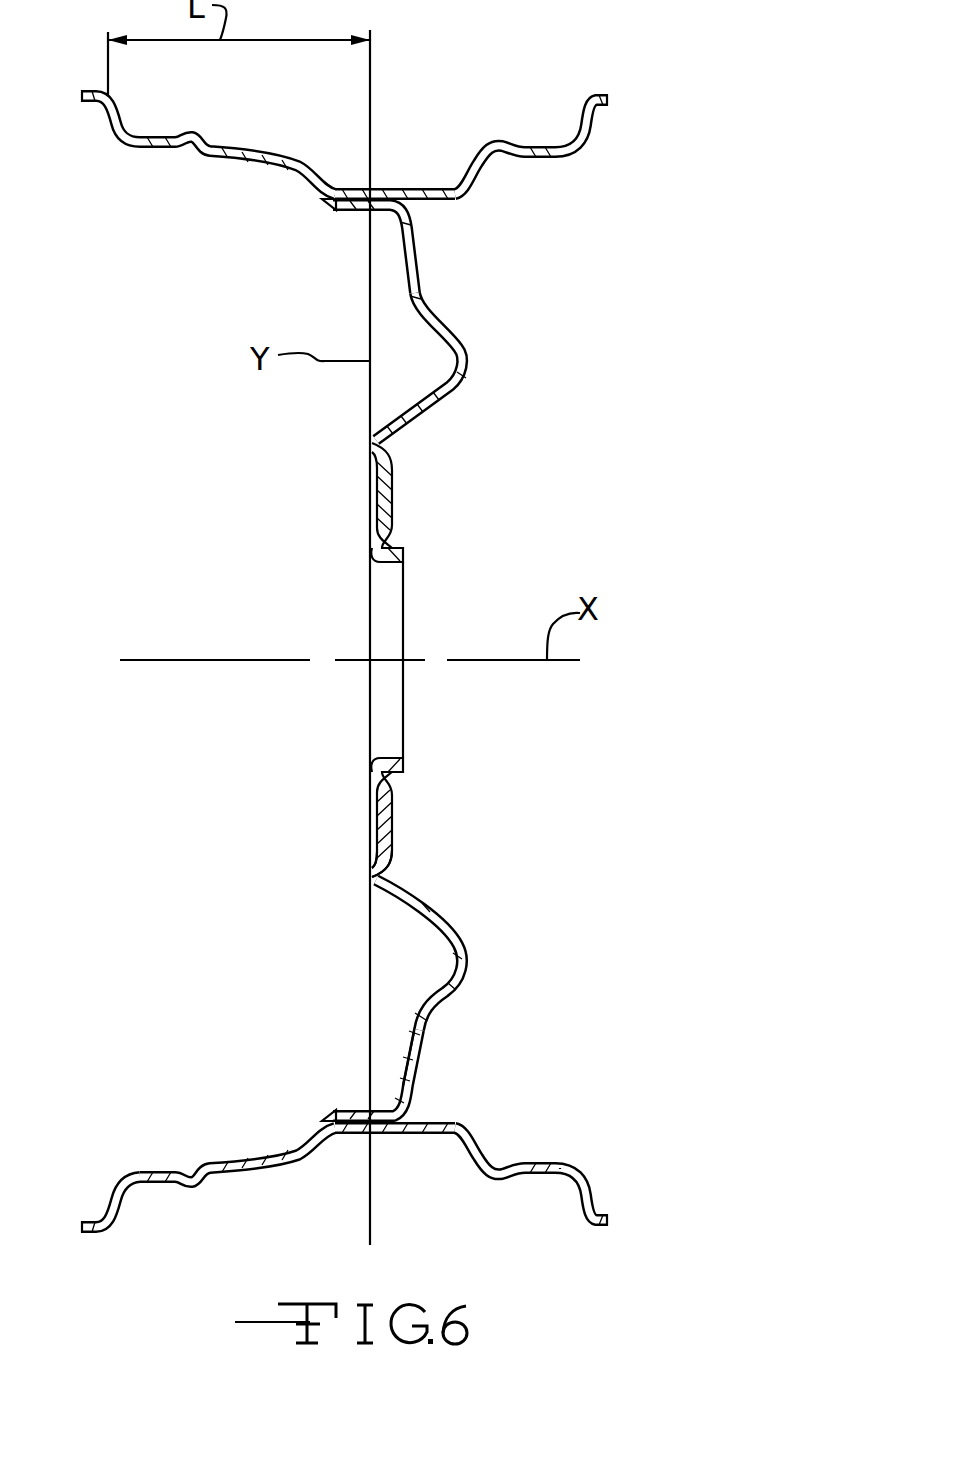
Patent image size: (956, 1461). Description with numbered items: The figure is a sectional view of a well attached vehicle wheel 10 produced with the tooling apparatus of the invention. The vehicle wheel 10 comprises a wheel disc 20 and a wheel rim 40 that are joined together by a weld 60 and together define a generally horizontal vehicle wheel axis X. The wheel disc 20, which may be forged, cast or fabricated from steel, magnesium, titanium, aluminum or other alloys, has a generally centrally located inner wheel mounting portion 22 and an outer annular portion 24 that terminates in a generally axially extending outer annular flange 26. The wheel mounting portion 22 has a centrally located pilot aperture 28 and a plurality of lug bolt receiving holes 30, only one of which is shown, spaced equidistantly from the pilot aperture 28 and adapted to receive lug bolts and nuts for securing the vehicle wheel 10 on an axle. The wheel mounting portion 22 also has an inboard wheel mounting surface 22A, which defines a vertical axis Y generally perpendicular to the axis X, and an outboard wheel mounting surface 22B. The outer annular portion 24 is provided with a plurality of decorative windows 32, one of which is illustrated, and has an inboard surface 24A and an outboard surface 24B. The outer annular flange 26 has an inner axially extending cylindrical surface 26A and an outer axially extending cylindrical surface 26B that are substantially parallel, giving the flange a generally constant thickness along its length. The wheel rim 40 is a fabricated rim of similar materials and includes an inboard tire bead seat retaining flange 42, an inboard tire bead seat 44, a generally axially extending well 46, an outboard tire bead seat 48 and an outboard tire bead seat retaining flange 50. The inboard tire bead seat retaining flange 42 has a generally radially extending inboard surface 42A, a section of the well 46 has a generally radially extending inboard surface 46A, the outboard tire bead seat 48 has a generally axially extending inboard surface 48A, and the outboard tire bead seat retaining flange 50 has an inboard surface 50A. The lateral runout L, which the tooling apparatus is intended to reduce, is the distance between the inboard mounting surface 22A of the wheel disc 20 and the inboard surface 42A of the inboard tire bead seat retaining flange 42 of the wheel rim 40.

The vehicle wheel 10 is at (392, 637).
The wheel disc 20 is at (480, 335).
The inner wheel mounting portion 22 is at (393, 494).
The inboard wheel mounting surface 22A is at (370, 873).
The outboard wheel mounting surface 22B is at (374, 867).
The outer annular portion 24 is at (422, 1030).
The inboard surface 24A is at (408, 1053).
The outboard surface 24B is at (418, 1056).
The outer annular flange 26 is at (347, 1124).
The inner axially extending cylindrical surface 26A is at (345, 1110).
The outer axially extending cylindrical surface 26B is at (387, 1134).
The pilot aperture 28 is at (389, 566).
The lug bolt receiving hole 30 is at (390, 830).
The decorative window 32 is at (422, 282).
The wheel rim 40 is at (596, 1168).
The inboard tire bead seat retaining flange 42 is at (122, 116).
The inboard surface 42A is at (112, 1200).
The inboard tire bead seat 44 is at (158, 134).
The well 46 is at (354, 188).
The inboard surface 46A is at (484, 1152).
The outboard tire bead seat 48 is at (541, 144).
The inboard surface 48A is at (547, 1164).
The outboard tire bead seat retaining flange 50 is at (591, 98).
The inboard surface 50A is at (594, 1193).
The weld 60 is at (325, 203).